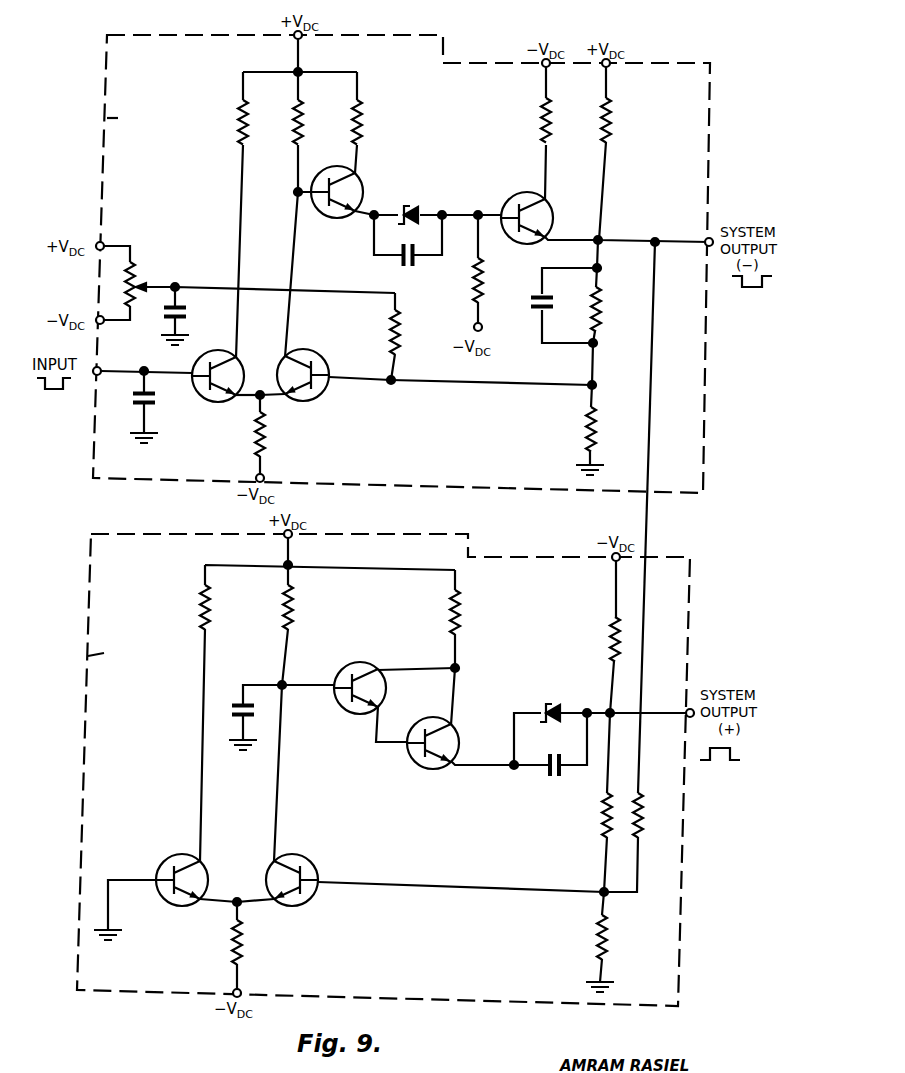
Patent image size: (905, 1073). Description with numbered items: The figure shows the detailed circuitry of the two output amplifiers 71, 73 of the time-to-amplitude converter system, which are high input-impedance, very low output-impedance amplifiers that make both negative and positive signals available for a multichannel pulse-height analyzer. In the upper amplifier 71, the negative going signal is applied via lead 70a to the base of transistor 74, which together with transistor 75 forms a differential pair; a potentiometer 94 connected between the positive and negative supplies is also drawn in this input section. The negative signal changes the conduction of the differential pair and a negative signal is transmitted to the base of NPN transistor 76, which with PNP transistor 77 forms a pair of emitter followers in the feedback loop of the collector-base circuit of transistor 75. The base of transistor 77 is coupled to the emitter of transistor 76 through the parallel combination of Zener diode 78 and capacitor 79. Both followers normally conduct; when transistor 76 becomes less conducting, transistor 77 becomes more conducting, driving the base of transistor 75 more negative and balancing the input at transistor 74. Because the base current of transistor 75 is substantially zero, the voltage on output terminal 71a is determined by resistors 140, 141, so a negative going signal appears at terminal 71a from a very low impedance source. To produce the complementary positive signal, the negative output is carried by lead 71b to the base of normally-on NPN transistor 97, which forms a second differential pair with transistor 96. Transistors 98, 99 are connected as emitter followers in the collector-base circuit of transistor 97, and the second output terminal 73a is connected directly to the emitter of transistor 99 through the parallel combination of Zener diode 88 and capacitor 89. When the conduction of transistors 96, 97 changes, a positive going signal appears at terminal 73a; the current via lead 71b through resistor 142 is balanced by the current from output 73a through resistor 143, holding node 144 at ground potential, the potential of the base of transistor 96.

The output amplifier 71 is at (107, 68).
The output amplifier 73 is at (91, 590).
The lead 70a is at (111, 368).
The output terminal 71a is at (684, 239).
The lead 71b is at (657, 345).
The second output terminal 73a is at (667, 711).
The transistor 74 is at (232, 362).
The transistor 75 is at (322, 366).
The NPN transistor 76 is at (351, 191).
The PNP transistor 77 is at (523, 198).
The Zener diode 78 is at (414, 206).
The capacitor 79 is at (415, 259).
The potentiometer 94 is at (136, 273).
The resistor 140 is at (600, 317).
The resistor 141 is at (600, 435).
The transistor 96 is at (195, 878).
The NPN transistor 97 is at (309, 864).
The transistor 98 is at (343, 670).
The transistor 99 is at (414, 755).
The Zener diode 88 is at (556, 705).
The capacitor 89 is at (548, 777).
The resistor 142 is at (643, 808).
The resistor 143 is at (604, 831).
The node 144 is at (608, 896).